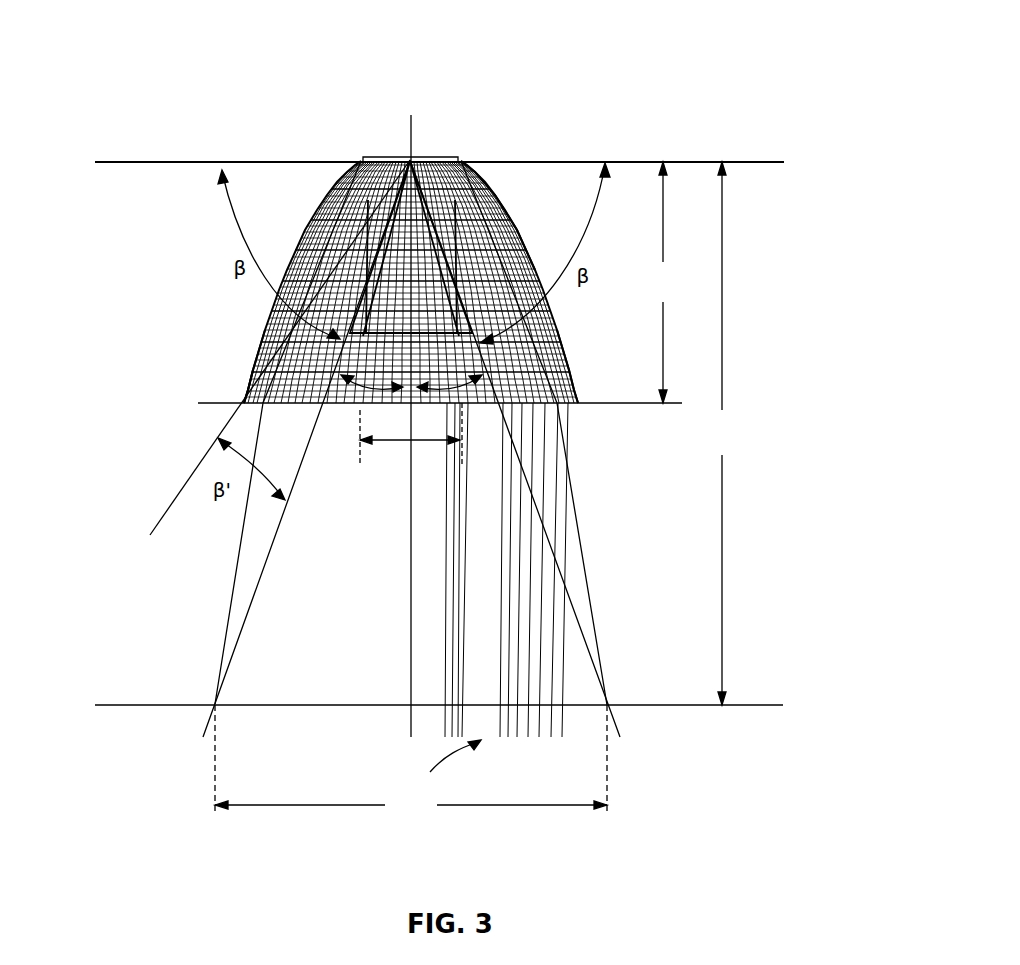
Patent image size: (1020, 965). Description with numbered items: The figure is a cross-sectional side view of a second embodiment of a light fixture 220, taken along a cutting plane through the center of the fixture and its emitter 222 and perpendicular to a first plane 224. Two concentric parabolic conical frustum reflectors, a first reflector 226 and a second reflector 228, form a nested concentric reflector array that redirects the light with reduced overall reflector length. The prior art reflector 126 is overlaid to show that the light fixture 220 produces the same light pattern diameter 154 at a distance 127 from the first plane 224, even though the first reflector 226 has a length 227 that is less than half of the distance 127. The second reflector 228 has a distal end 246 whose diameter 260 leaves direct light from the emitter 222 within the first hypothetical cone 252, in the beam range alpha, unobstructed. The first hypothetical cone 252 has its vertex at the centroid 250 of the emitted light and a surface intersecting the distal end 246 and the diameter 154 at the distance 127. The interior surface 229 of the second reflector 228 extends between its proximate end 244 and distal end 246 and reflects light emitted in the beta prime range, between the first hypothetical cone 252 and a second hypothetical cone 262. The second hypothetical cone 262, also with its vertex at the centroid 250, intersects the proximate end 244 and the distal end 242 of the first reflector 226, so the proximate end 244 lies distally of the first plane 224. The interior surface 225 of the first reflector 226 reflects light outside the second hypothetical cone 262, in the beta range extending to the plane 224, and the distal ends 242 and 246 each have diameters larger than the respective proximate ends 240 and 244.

The light fixture 220 is at (733, 45).
The emitter 222 is at (378, 157).
The first plane 224 is at (763, 161).
The interior surface of the first reflector 225 is at (268, 330).
The first reflector 226 is at (250, 378).
The length of the first reflector 227 is at (663, 282).
The second reflector 228 is at (350, 270).
The interior surface of the second reflector 229 is at (465, 245).
The proximate end of the first reflector 240 is at (473, 162).
The distal end of the first reflector 242 is at (578, 405).
The proximate end of the second reflector 244 is at (522, 172).
The distal end of the second reflector 246 is at (482, 340).
The centroid 250 is at (412, 160).
The first hypothetical cone 252 is at (270, 552).
The diameter of the distal end of the second reflector 260 is at (386, 452).
The second hypothetical cone 262 is at (180, 490).
The reflector 126 is at (225, 627).
The distance 127 is at (722, 433).
The light pattern diameter 154 is at (411, 761).